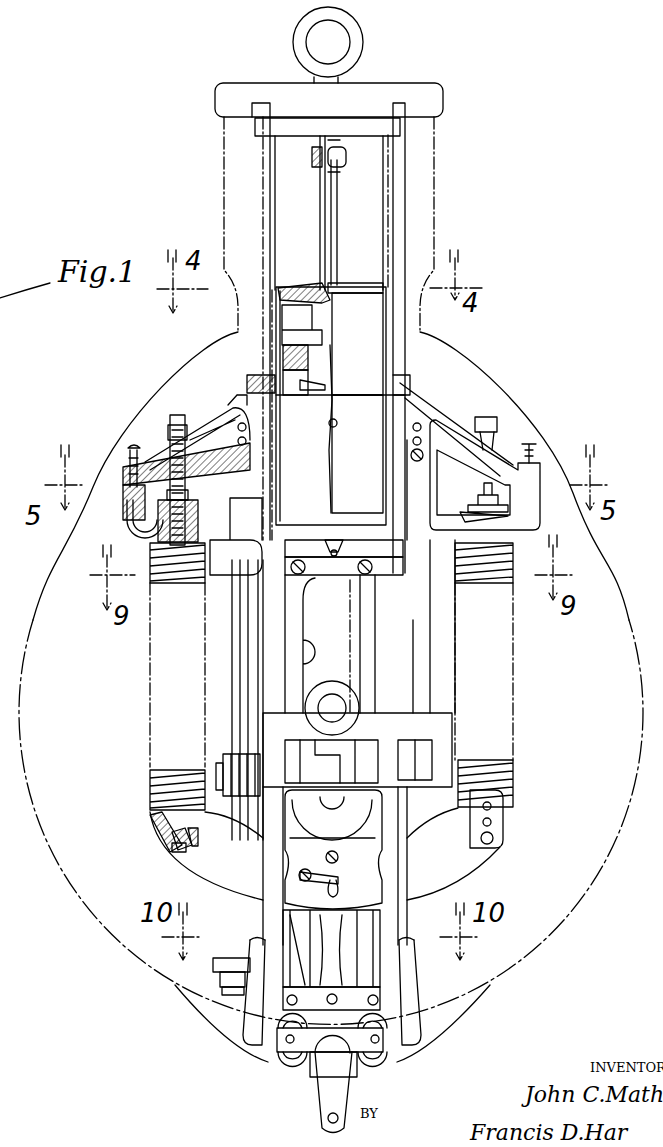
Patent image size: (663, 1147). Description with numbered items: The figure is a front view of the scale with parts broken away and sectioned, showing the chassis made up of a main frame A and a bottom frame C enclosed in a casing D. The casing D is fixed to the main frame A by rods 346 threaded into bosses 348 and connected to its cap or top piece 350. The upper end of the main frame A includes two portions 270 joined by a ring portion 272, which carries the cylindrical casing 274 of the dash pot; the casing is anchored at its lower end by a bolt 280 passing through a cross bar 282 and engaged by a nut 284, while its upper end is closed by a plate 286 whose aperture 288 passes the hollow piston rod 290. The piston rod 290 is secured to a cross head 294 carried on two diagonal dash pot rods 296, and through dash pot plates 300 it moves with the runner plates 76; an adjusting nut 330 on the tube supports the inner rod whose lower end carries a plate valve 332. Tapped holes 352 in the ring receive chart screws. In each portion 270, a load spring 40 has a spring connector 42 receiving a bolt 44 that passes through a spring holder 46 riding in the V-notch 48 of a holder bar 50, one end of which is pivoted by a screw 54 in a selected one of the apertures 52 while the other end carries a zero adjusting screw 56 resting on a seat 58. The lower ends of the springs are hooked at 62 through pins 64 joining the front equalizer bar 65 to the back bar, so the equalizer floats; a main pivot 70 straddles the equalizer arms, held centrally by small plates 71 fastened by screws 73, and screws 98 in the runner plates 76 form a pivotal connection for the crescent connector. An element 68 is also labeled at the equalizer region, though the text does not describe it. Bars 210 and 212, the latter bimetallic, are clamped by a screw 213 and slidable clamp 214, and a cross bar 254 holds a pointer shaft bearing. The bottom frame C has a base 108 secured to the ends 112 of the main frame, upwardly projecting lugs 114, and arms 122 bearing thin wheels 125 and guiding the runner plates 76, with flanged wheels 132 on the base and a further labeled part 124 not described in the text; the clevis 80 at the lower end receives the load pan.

The cap or top piece 350 is at (432, 90).
The casing D is at (434, 223).
The rods 346 is at (405, 168).
The cross head 294 is at (358, 125).
The dash pot rods 296 is at (275, 196).
The piston rod 290 is at (337, 265).
The adjusting nut 330 is at (346, 151).
The cross bar 282 is at (338, 413).
The plate 286 is at (292, 285).
The cylindrical casing 274 is at (336, 398).
The ring portion 272 is at (345, 400).
The plate valve 332 is at (318, 395).
The tapped holes 352 is at (337, 423).
The bosses 348 is at (405, 380).
The portions 270 is at (450, 423).
The main frame A is at (190, 400).
The aperture 288 is at (380, 570).
The nut 284 is at (340, 548).
The bolt 280 is at (328, 572).
The dash pot plates 300 is at (375, 645).
The load spring 40 is at (152, 660).
The zero adjusting screw 56 is at (133, 445).
The V-notch 48 is at (160, 455).
The spring holder 46 is at (148, 462).
The bolt 44 is at (178, 413).
The holder bar 50 is at (228, 438).
The apertures 52 is at (244, 385).
The spring connector 42 is at (198, 505).
The screw 54 is at (235, 470).
The seat 58 is at (128, 510).
The bar 210 is at (233, 636).
The bar 212 is at (248, 683).
The screw 213 is at (218, 770).
The clamp 214 is at (245, 757).
The cross bar 254 is at (357, 813).
The front equalizer bar 65 is at (325, 854).
The hooked lower ends 62 is at (158, 832).
The pins 64 is at (186, 850).
The pin 68 is at (202, 832).
The bottom frame C is at (248, 1030).
The screws 98 is at (338, 858).
The small plates 71 is at (320, 875).
The screws 73 is at (317, 887).
The main pivot 70 is at (340, 886).
The runner plates 76 is at (285, 1105).
The slot 124 is at (350, 965).
The thin wheels 125 is at (293, 975).
The arms 122 is at (365, 962).
The lugs 114 is at (410, 970).
The base 108 is at (300, 1045).
The ends 112 is at (268, 1042).
The flanged wheels 132 is at (385, 1065).
The clevis 80 is at (322, 1110).